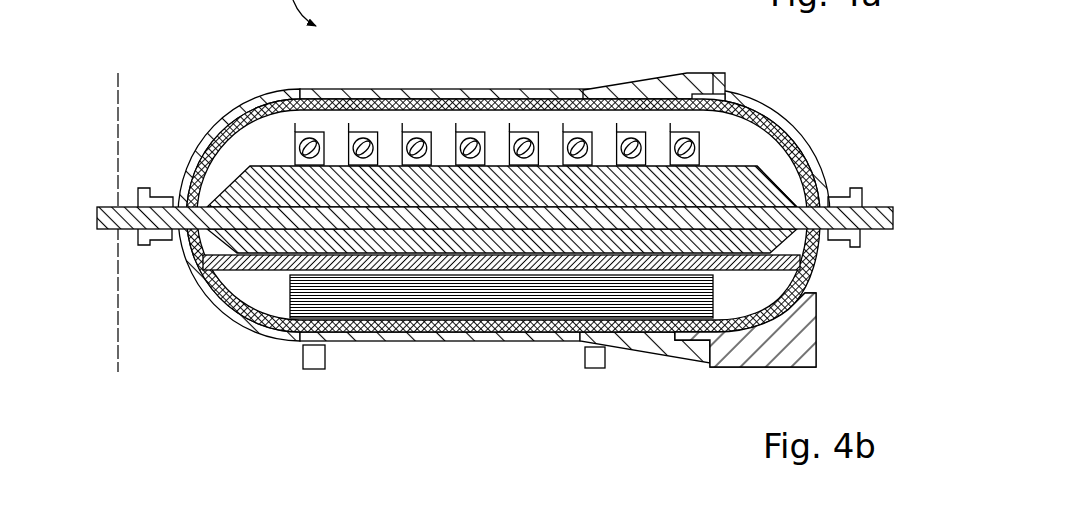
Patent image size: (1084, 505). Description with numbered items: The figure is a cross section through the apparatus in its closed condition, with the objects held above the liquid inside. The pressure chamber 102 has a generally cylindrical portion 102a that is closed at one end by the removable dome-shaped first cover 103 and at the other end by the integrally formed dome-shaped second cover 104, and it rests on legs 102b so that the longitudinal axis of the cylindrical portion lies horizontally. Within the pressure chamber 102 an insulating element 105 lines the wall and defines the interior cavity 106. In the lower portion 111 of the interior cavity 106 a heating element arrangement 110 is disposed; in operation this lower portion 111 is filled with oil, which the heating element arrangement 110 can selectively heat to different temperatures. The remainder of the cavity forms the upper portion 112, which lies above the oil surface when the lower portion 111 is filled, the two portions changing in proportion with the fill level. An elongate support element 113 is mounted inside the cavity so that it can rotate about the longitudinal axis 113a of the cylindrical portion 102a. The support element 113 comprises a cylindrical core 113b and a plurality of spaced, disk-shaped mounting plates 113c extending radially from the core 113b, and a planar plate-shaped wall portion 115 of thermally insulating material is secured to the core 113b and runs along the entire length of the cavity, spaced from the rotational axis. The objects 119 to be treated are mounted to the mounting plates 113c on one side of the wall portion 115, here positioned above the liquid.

The pressure chamber 102 is at (541, 206).
The cylindrical portion 102a is at (519, 97).
The legs 102b is at (313, 362).
The first cover 103 is at (803, 130).
The second cover 104 is at (232, 106).
The insulating element 105 is at (595, 100).
The interior cavity 106 is at (730, 103).
The heating element arrangement 110 is at (472, 331).
The lower portion 111 is at (774, 280).
The upper portion 112 is at (794, 177).
The support element 113 is at (561, 97).
The longitudinal axis 113a is at (870, 213).
The cylindrical core 113b is at (245, 188).
The mounting plates 113c is at (403, 130).
The wall portion 115 is at (224, 261).
The objects 119 is at (467, 140).